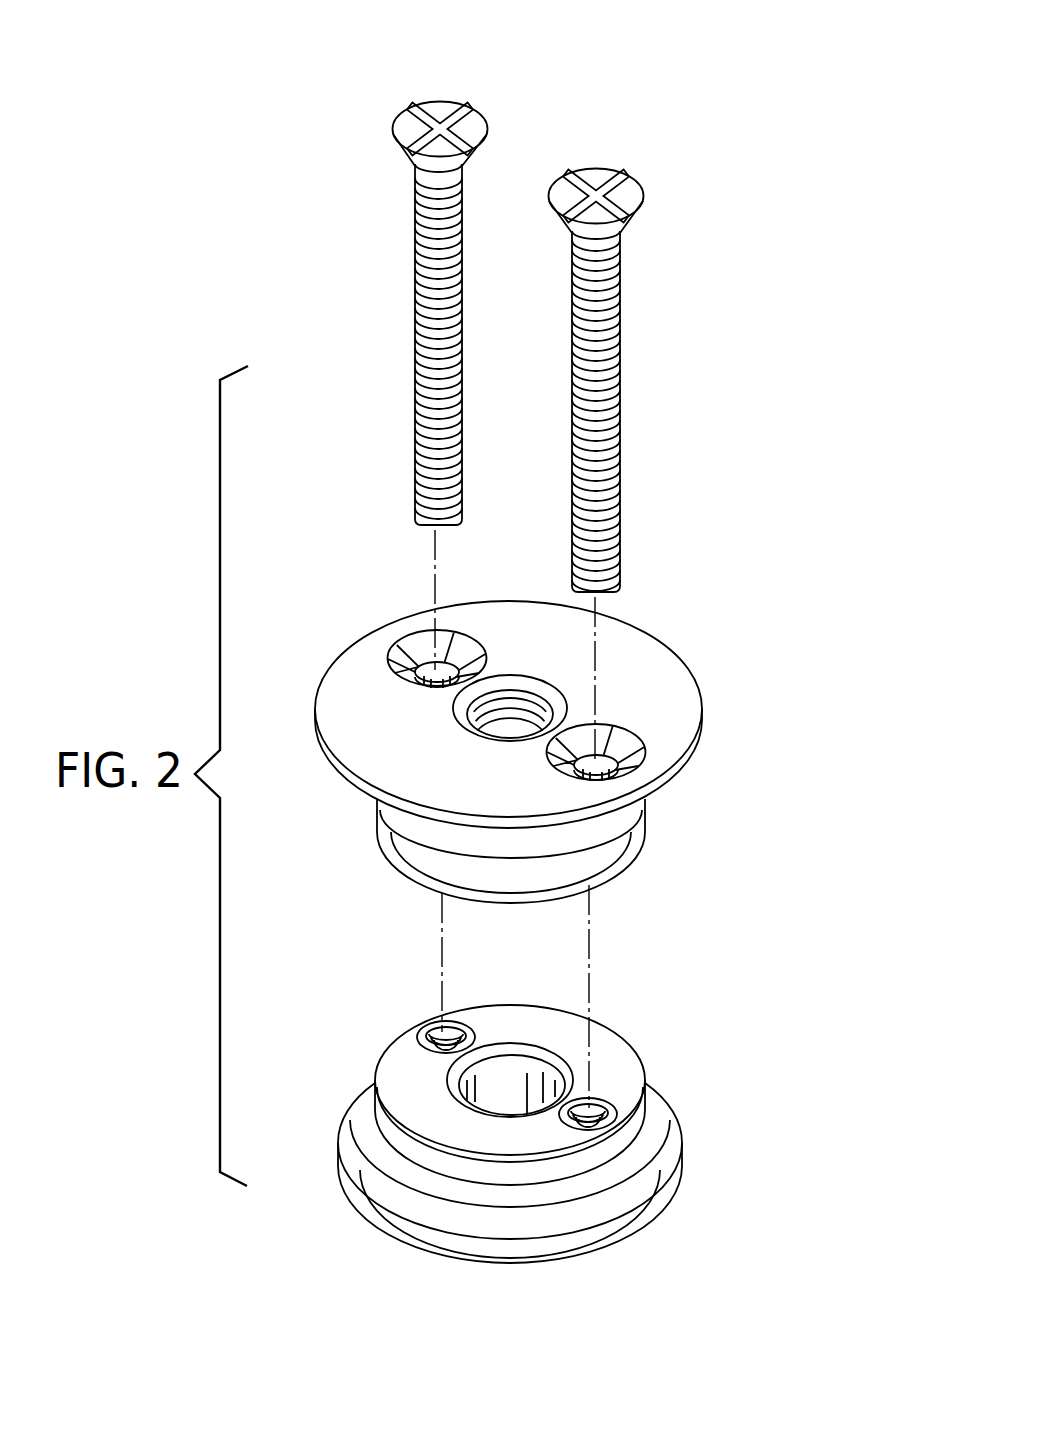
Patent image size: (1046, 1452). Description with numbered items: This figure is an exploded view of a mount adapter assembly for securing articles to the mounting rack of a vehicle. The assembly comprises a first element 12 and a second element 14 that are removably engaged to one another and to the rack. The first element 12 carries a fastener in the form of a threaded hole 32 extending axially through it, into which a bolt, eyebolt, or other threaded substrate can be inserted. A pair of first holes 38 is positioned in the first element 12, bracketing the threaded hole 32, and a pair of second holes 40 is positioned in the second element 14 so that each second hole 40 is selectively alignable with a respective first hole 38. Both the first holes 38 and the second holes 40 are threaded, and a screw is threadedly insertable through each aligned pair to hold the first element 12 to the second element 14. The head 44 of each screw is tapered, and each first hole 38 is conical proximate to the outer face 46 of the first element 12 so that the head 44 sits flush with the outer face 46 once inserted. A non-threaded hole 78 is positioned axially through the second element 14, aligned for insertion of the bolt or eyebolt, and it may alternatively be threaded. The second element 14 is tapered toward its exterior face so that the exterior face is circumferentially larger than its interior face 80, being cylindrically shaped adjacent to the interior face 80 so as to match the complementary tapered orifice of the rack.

The first element 12 is at (580, 679).
The second element 14 is at (549, 1175).
The threaded hole 32 is at (485, 722).
The first holes 38 is at (587, 737).
The second holes 40 is at (447, 313).
The head 44 is at (477, 110).
The outer face 46 is at (393, 728).
The non-threaded hole 78 is at (498, 1092).
The interior face 80 is at (510, 1263).